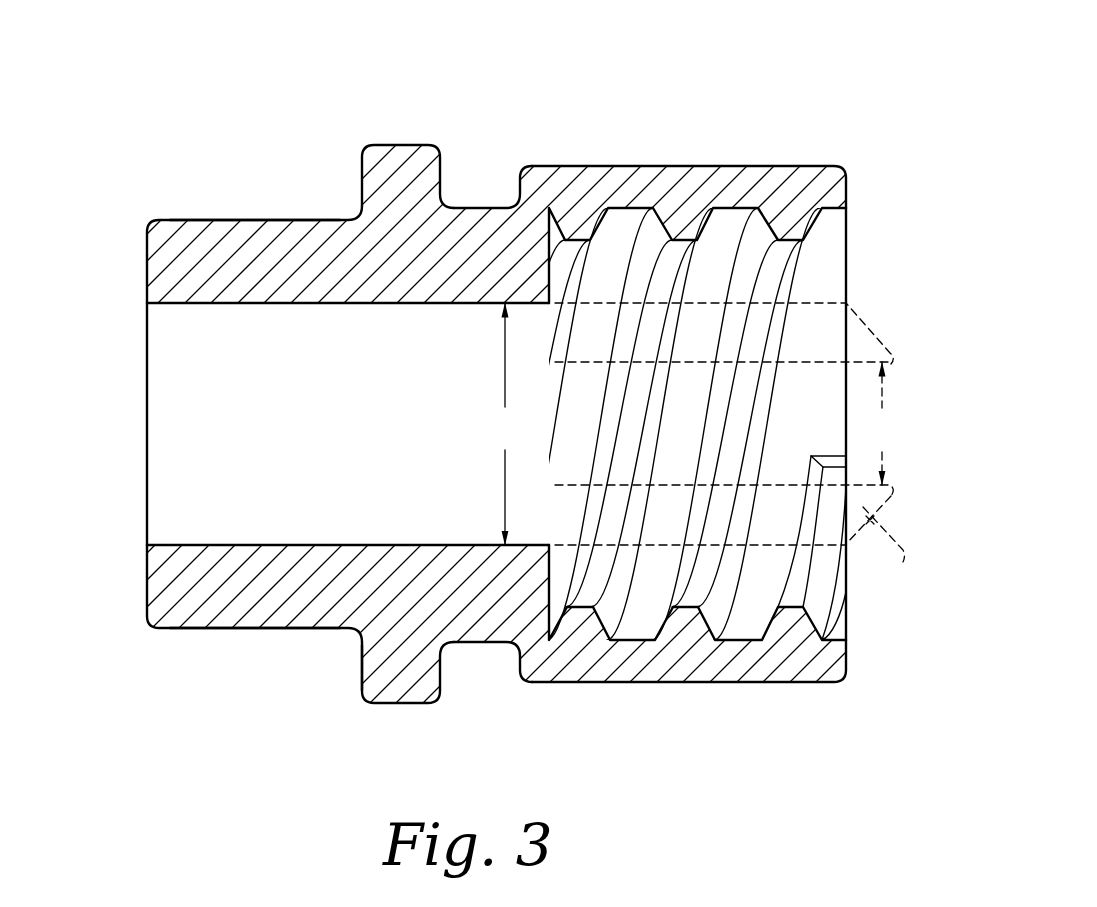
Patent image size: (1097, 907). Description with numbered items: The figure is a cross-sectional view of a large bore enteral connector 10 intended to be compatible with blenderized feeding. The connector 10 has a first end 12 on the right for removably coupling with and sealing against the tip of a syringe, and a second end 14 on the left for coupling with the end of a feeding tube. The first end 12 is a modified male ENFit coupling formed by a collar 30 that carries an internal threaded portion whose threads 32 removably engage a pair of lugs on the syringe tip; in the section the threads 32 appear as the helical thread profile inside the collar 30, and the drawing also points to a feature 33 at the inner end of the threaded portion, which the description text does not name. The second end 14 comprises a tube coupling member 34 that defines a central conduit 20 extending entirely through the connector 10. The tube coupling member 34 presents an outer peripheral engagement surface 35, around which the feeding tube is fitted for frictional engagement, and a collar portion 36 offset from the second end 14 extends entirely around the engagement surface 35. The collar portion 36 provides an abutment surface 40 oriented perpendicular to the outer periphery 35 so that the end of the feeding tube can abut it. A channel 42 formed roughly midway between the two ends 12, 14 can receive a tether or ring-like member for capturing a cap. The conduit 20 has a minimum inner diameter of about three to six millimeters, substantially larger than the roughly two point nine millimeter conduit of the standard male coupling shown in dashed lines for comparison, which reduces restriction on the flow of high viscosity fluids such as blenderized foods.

The connector 10 is at (504, 390).
The first end 12 is at (710, 422).
The second end 14 is at (200, 428).
The central conduit 20 is at (203, 416).
The collar 30 is at (752, 177).
The threads 32 is at (770, 268).
The thread shoulder face 33 is at (552, 575).
The tube coupling member 34 is at (218, 237).
The outer peripheral engagement surface 35 is at (225, 628).
The collar portion 36 is at (371, 459).
The abutment surface 40 is at (358, 673).
The channel 42 is at (482, 677).